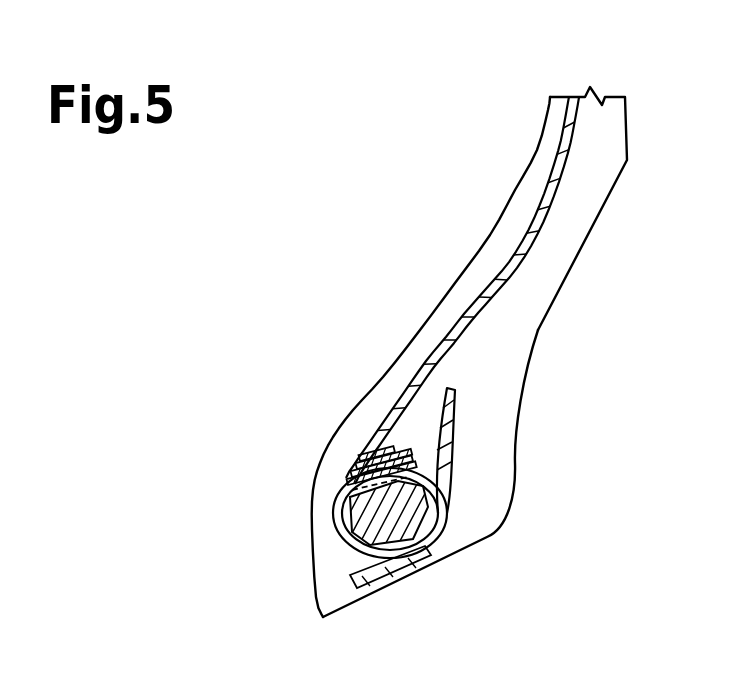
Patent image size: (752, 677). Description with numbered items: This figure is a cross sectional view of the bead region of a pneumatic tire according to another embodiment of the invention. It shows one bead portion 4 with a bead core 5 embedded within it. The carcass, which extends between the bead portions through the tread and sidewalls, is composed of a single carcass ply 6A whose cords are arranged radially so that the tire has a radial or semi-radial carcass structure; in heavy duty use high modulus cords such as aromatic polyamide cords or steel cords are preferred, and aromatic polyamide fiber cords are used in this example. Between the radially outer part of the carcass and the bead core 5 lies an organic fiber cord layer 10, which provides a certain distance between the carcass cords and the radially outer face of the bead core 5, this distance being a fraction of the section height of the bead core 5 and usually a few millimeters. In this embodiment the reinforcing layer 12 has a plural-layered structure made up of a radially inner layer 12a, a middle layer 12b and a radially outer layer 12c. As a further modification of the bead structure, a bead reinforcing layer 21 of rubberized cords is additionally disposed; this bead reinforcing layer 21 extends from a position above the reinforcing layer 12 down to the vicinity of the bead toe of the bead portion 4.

The bead portion 4 is at (537, 402).
The bead core 5 is at (370, 522).
The carcass ply 6A is at (433, 343).
The organic fiber cord layer 10 is at (330, 508).
The reinforcing layer 12 is at (306, 394).
The radially inner layer 12a is at (326, 443).
The middle layer 12b is at (357, 465).
The radially outer layer 12c is at (393, 446).
The bead reinforcing layer 21 is at (460, 470).